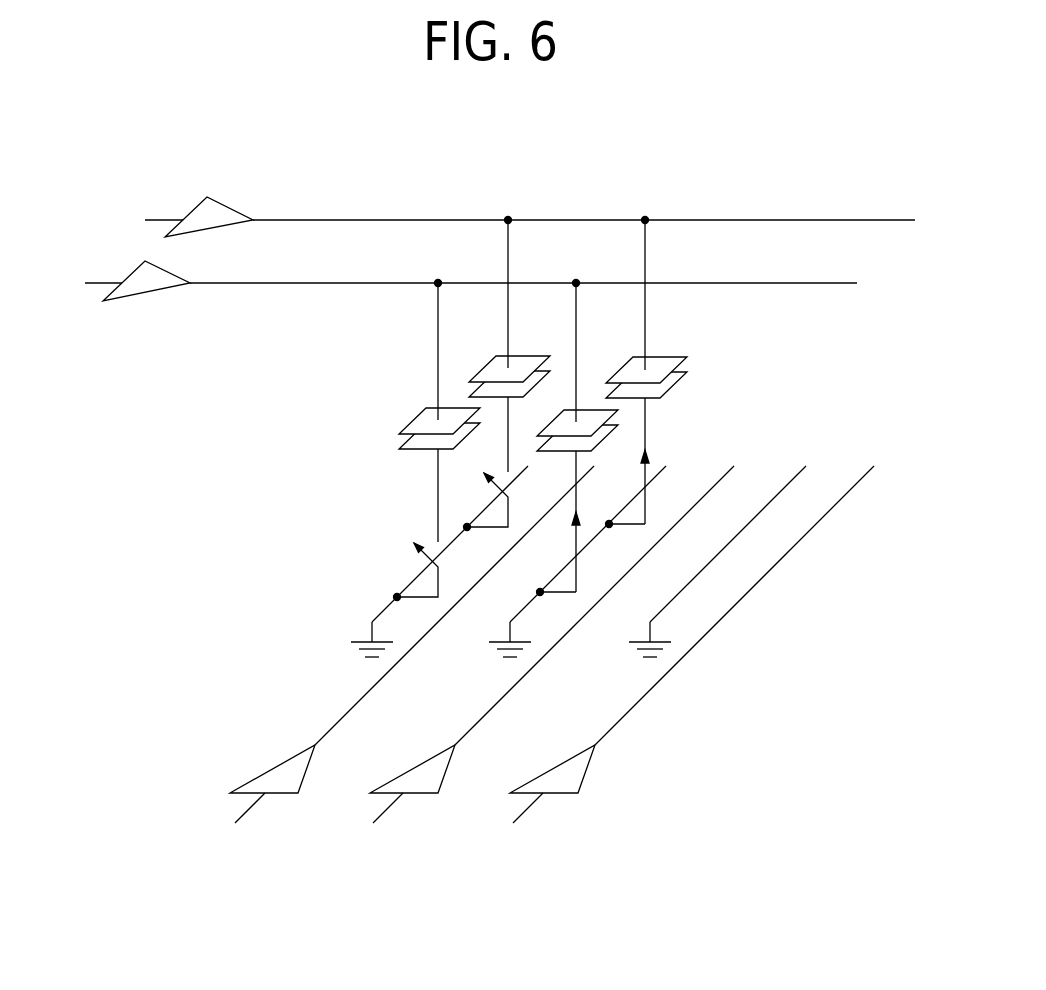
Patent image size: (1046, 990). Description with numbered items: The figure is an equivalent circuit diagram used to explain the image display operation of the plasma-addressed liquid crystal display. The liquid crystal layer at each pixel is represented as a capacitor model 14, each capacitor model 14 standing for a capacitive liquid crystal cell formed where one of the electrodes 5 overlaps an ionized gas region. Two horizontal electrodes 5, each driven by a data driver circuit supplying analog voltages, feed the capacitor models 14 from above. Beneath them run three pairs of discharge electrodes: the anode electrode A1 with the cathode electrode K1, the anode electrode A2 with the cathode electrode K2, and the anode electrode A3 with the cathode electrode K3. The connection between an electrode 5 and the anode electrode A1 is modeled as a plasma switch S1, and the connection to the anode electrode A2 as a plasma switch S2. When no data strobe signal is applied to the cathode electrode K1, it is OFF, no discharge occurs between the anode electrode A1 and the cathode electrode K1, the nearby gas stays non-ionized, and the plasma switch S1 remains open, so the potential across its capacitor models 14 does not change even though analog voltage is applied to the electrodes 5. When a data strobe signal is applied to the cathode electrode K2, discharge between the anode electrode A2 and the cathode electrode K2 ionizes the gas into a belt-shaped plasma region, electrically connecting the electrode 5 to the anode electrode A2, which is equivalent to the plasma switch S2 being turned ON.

The electrode 5 is at (486, 249).
The capacitor model 14 is at (412, 421).
The plasma switch S1 is at (440, 526).
The plasma switch S2 is at (615, 509).
The anode electrode A1 is at (425, 561).
The anode electrode A2 is at (564, 561).
The anode electrode A3 is at (702, 561).
The cathode electrode K1 is at (412, 644).
The cathode electrode K2 is at (552, 644).
The cathode electrode K3 is at (692, 644).